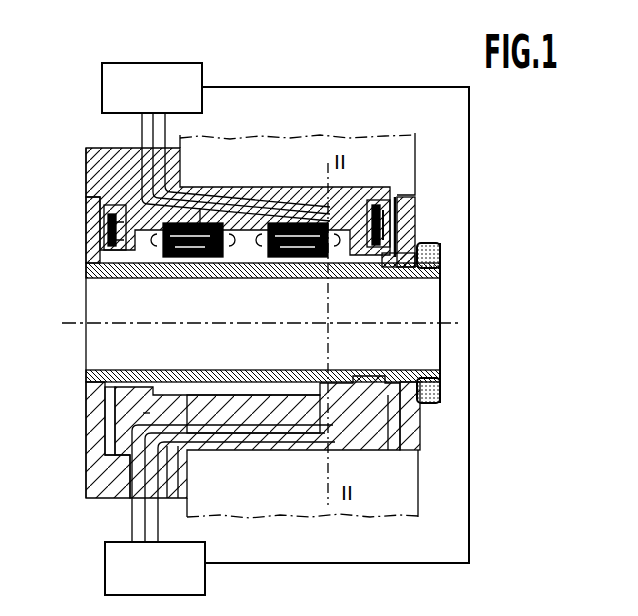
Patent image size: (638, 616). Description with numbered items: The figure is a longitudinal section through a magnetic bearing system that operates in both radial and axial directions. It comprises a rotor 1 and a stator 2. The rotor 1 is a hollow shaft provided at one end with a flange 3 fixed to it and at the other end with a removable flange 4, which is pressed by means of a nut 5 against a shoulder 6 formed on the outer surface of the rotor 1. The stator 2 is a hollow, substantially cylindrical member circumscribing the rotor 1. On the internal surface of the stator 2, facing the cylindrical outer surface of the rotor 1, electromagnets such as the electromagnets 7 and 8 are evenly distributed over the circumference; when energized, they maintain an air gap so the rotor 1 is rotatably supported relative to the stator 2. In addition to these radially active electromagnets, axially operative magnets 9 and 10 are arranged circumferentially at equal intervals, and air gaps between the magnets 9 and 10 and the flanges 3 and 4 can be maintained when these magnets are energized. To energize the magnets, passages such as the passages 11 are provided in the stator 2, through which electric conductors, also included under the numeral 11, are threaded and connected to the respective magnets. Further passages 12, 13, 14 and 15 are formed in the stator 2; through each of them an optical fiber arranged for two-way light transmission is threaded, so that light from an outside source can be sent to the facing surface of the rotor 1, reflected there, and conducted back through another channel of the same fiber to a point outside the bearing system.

The rotor 1 is at (86, 277).
The stator 2 is at (95, 175).
The flange 3 is at (88, 238).
The removable flange 4 is at (416, 215).
The nut 5 is at (440, 255).
The shoulder 6 is at (383, 268).
The electromagnet 7 is at (203, 223).
The electromagnet 8 is at (283, 222).
The axially operative magnet 9 is at (104, 215).
The axially operative magnet 10 is at (380, 212).
The passages with electric conductors 11 is at (132, 153).
The passage 12 is at (125, 470).
The passage 13 is at (118, 493).
The passage 14 is at (140, 502).
The passage 15 is at (185, 500).